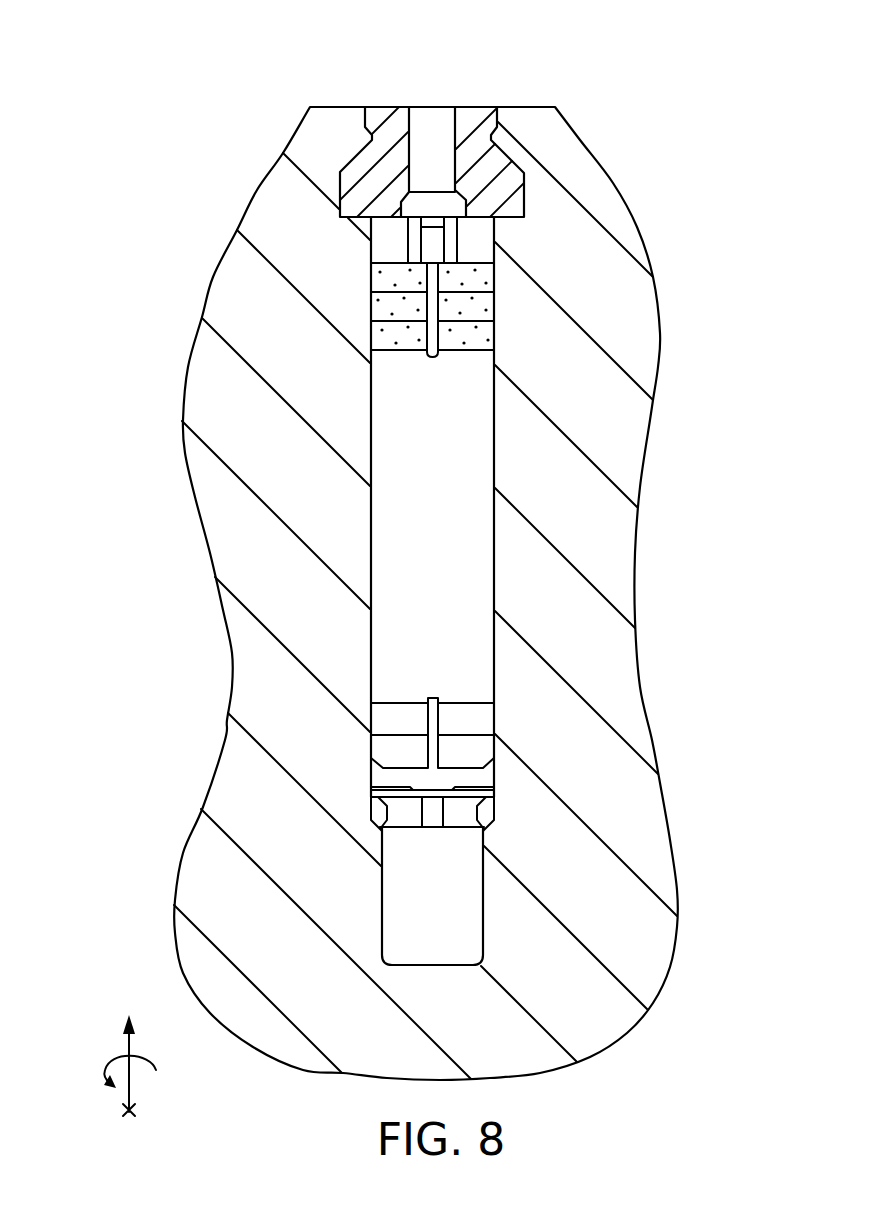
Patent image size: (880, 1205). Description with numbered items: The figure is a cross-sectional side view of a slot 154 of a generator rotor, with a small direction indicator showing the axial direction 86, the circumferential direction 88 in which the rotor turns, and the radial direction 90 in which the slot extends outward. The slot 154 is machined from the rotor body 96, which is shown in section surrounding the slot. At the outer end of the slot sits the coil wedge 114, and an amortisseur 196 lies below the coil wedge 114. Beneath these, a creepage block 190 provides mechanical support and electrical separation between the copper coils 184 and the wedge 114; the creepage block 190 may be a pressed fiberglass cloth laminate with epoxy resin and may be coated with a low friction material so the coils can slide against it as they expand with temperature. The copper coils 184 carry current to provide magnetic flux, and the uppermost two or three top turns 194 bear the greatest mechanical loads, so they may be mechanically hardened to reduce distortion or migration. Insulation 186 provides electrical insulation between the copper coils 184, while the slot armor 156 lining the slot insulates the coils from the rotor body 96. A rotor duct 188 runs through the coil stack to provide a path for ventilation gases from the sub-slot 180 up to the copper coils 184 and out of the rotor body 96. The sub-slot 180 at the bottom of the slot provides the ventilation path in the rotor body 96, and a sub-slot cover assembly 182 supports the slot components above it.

The rotor body 96 is at (205, 385).
The slot 154 is at (368, 68).
The wedge 114 is at (483, 167).
The amortisseur 196 is at (480, 213).
The creepage block 190 is at (393, 242).
The copper coils 184 is at (385, 305).
The top turns 194 is at (487, 333).
The rotor duct 188 is at (435, 343).
The insulation 186 is at (400, 353).
The slot armor 156 is at (370, 625).
The sub-slot cover assembly 182 is at (448, 800).
The sub-slot 180 is at (455, 930).
The circumferential direction 88 is at (113, 1062).
The radial direction 90 is at (130, 1087).
The axial direction 86 is at (125, 1113).